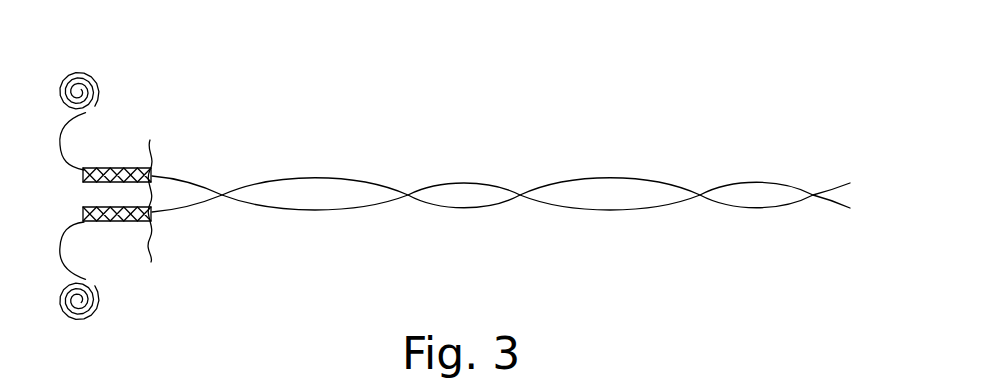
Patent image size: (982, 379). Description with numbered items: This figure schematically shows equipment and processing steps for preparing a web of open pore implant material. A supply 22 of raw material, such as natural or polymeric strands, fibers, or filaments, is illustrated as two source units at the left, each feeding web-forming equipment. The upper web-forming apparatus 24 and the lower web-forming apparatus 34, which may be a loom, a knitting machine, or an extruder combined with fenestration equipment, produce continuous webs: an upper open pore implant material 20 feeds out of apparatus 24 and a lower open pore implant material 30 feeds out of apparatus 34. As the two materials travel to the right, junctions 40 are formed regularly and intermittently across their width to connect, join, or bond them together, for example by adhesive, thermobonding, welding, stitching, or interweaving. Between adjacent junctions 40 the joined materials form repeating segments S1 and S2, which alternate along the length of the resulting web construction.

The first (upper) open pore implant material 20 is at (509, 193).
The supply 22 is at (105, 54).
The web-forming apparatus 24 is at (92, 168).
The web-forming apparatus 34 is at (92, 222).
The second (lower) open pore implant material 30 is at (204, 229).
The junctions 40 is at (230, 219).
The segment S1 is at (299, 177).
The segment S2 is at (452, 183).